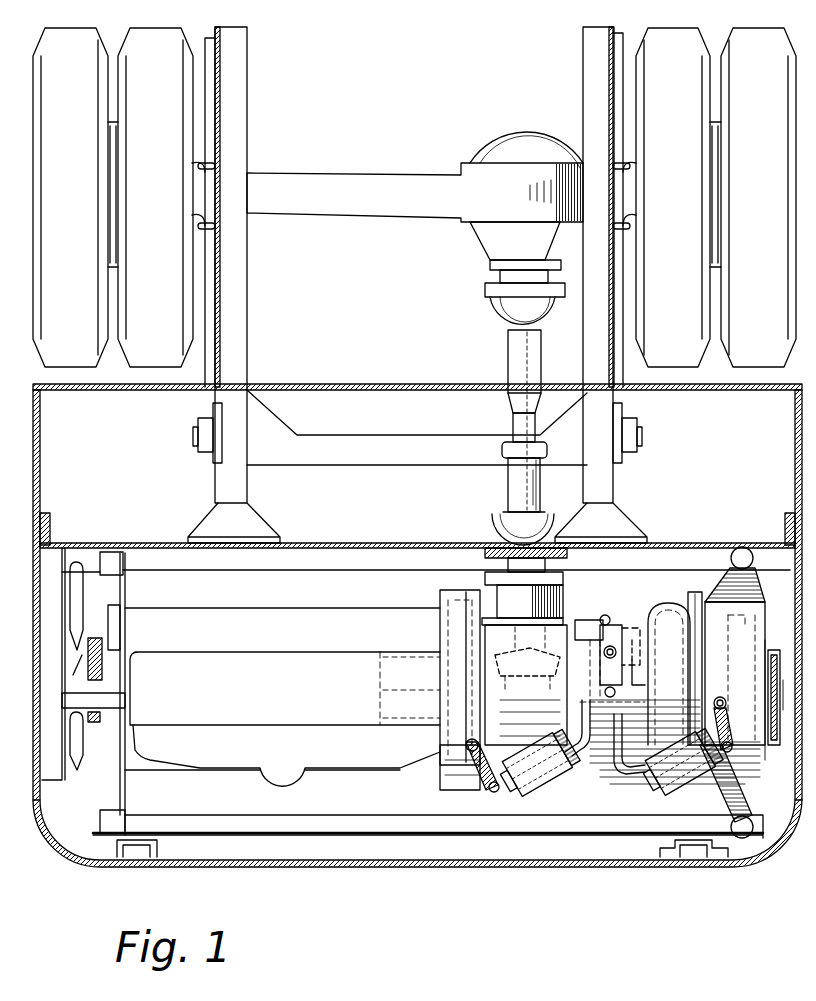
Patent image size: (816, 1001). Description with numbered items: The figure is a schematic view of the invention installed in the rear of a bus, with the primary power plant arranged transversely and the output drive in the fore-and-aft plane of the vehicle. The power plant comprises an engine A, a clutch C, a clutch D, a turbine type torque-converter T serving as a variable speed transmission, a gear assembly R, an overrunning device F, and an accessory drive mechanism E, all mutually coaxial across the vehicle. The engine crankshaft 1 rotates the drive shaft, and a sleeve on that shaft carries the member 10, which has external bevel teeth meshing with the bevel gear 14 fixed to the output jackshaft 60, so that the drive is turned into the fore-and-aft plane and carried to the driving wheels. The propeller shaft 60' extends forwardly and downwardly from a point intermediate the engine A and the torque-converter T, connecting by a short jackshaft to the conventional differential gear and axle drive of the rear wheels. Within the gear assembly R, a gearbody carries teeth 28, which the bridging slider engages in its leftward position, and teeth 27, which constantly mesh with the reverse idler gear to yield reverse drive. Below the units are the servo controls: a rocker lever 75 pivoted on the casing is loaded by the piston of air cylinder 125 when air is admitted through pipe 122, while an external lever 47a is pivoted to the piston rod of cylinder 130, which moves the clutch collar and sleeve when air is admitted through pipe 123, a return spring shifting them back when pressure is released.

The propeller shaft 60' is at (508, 437).
The engine A is at (242, 660).
The engine crankshaft 1 is at (410, 700).
The clutch D is at (483, 678).
The member 10 is at (512, 690).
The bevel gear 14 is at (528, 670).
The output jackshaft 60 is at (536, 591).
The teeth of gearbody 28 is at (598, 625).
The gear assembly R is at (618, 620).
The teeth of gearbody 27 is at (626, 660).
The overrunning device F is at (632, 680).
The turbine type torque-converter T is at (673, 633).
The clutch C is at (742, 634).
The accessory drive mechanism E is at (774, 652).
The external lever 47a is at (705, 718).
The rocker lever 75 is at (462, 790).
The air cylinder 125 is at (520, 792).
The pipe 122 is at (586, 736).
The pipe 123 is at (622, 778).
The cylinder 130 is at (665, 790).